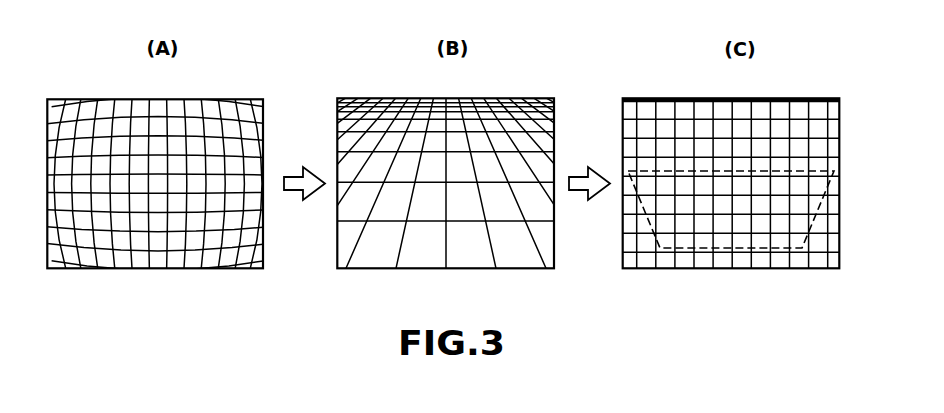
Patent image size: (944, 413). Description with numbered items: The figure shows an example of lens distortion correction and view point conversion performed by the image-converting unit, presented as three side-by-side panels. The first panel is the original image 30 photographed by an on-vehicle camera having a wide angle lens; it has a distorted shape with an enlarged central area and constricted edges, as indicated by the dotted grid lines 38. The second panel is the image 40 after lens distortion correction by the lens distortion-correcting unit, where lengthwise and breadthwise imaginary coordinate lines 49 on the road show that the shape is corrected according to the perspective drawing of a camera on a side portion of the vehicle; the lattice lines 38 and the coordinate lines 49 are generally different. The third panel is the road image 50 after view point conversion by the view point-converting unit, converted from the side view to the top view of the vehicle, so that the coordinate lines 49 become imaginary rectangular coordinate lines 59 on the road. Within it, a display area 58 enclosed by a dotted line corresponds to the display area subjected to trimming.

The original image 30 is at (166, 99).
The dotted grid lines 38 is at (197, 135).
The image after lens distortion correction 40 is at (452, 99).
The imaginary coordinate lines 49 is at (477, 152).
The road image 50 is at (638, 99).
The imaginary rectangular coordinate lines 59 is at (760, 118).
The display area 58 is at (743, 205).